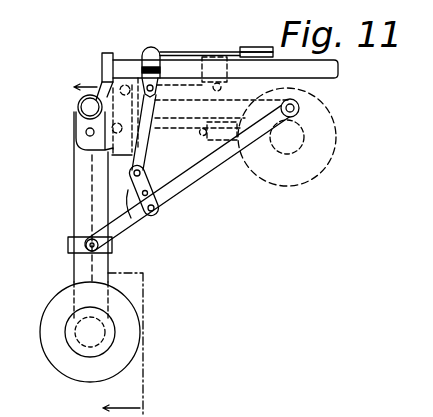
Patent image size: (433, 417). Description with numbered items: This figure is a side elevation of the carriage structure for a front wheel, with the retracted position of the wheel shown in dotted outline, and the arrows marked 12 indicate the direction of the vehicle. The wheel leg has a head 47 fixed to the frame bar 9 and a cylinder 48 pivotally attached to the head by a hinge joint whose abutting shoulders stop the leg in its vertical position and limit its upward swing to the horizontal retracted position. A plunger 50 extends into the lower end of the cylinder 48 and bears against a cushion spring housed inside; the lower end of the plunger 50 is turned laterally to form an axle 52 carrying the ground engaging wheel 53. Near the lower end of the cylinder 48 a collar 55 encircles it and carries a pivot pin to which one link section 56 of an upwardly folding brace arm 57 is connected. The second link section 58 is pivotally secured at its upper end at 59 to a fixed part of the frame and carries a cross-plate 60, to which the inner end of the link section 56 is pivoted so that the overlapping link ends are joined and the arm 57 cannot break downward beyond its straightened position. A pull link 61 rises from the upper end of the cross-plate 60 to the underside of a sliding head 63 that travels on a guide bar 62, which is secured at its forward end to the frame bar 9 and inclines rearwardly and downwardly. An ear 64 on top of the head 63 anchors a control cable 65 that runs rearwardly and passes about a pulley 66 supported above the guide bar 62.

The frame bar 9 is at (77, 101).
The direction of travel arrow 12 is at (93, 245).
The head 47 is at (73, 131).
The cylinder 48 is at (75, 208).
The plunger 50 is at (76, 273).
The axle 52 is at (82, 333).
The ground engaging wheel 53 is at (56, 306).
The collar 55 is at (68, 245).
The link section 56 is at (129, 224).
The brace arm 57 is at (173, 196).
The link section 58 is at (197, 168).
The pivot 59 is at (300, 110).
The cross-plate 60 is at (133, 186).
The pull link 61 is at (108, 158).
The guide bar 62 is at (341, 73).
The sliding head 63 is at (158, 60).
The ear 64 is at (152, 51).
The control cable 65 is at (237, 39).
The pulley 66 is at (259, 47).